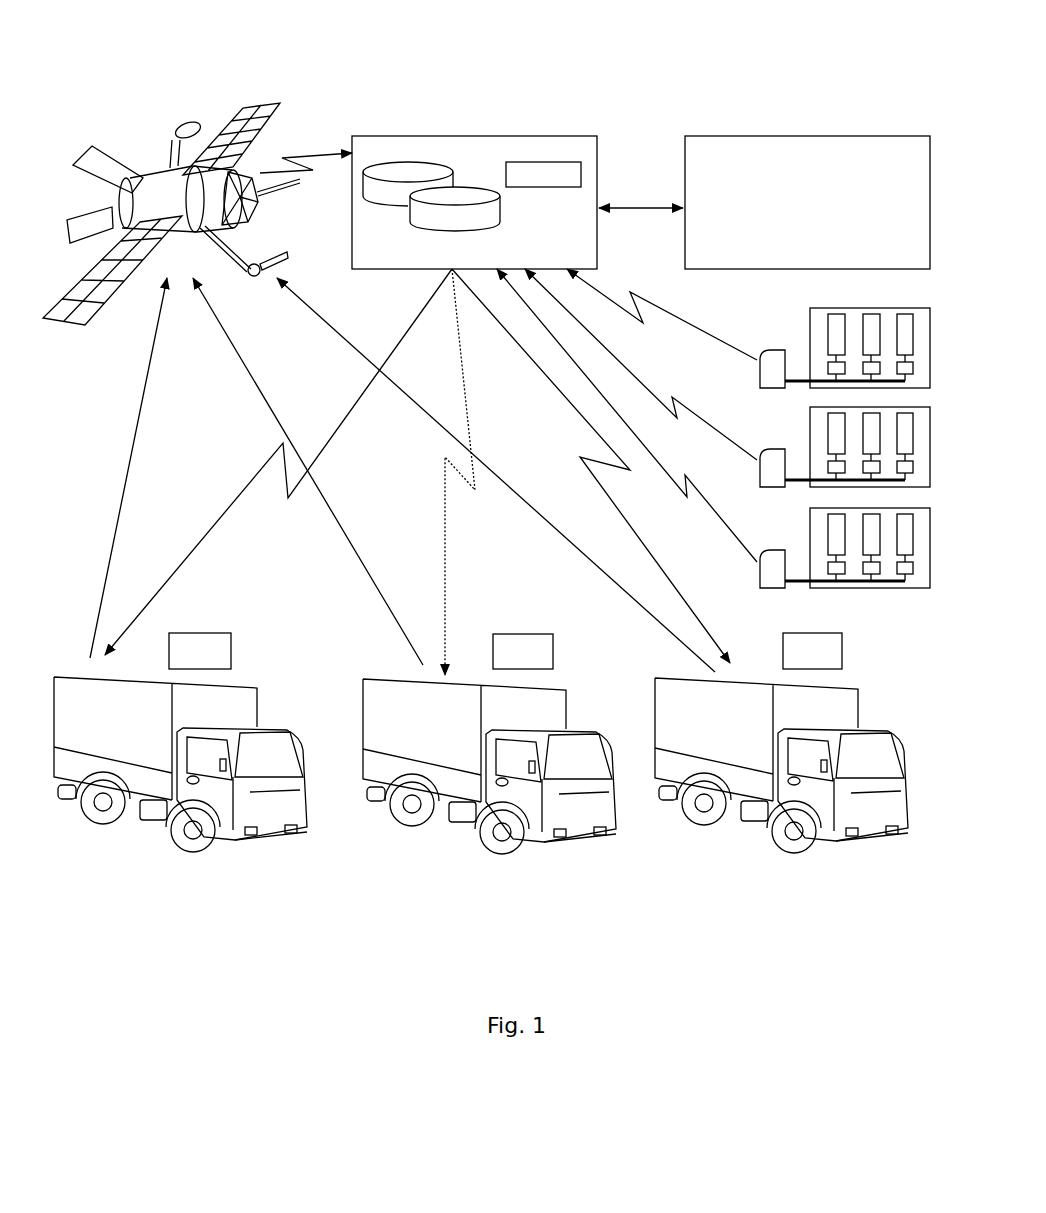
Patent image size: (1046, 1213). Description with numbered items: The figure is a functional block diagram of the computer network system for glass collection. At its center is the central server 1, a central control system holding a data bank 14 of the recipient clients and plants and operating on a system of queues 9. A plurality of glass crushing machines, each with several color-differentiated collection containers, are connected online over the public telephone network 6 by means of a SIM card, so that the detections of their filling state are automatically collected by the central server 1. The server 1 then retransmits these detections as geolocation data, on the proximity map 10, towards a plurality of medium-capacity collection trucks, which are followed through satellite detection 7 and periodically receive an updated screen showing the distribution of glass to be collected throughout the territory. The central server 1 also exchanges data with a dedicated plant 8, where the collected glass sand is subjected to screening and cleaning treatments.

The central server 1 is at (474, 202).
The data bank 14 is at (431, 187).
The system of queues 9 is at (543, 174).
The dedicated plant 8 is at (807, 202).
The satellite detection 7 is at (158, 174).
The public telephone network 6 is at (627, 415).
The map 10 is at (505, 651).